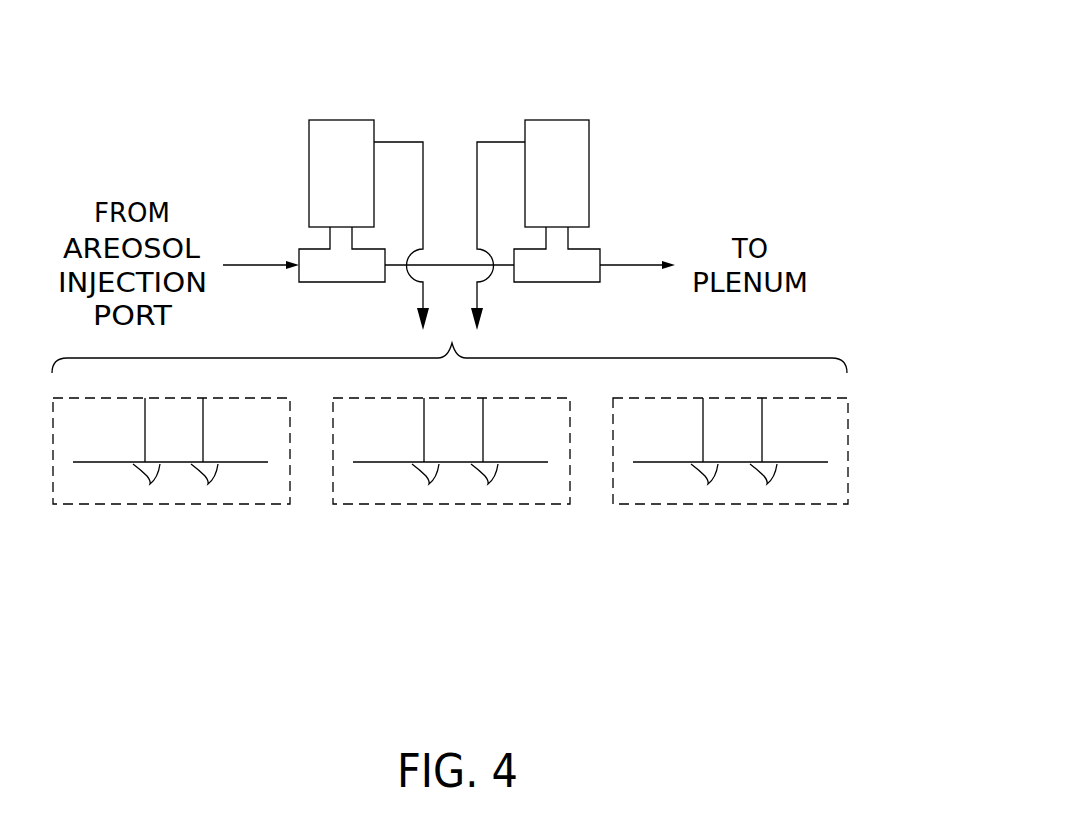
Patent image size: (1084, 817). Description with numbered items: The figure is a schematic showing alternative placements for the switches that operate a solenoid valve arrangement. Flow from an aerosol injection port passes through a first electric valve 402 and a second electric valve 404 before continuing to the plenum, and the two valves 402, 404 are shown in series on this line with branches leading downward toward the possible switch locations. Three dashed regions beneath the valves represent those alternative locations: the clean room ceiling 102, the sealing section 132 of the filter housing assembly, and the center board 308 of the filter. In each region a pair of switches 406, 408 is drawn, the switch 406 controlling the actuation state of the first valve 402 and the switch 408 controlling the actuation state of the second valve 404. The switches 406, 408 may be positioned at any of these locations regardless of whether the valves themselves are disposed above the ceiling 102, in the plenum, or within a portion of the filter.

The first electric valve 402 is at (333, 102).
The second electric valve 404 is at (549, 102).
The clean room ceiling 102 is at (93, 464).
The sealing section 132 is at (373, 464).
The center board 308 is at (802, 461).
The switch 406 is at (128, 466).
The switch 408 is at (186, 466).